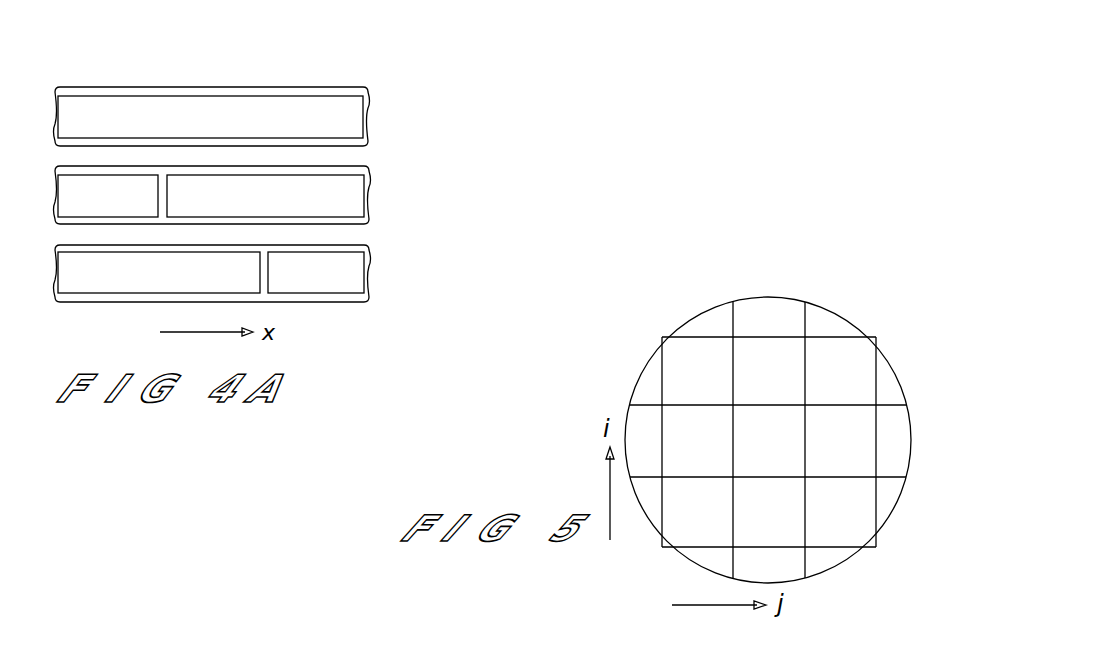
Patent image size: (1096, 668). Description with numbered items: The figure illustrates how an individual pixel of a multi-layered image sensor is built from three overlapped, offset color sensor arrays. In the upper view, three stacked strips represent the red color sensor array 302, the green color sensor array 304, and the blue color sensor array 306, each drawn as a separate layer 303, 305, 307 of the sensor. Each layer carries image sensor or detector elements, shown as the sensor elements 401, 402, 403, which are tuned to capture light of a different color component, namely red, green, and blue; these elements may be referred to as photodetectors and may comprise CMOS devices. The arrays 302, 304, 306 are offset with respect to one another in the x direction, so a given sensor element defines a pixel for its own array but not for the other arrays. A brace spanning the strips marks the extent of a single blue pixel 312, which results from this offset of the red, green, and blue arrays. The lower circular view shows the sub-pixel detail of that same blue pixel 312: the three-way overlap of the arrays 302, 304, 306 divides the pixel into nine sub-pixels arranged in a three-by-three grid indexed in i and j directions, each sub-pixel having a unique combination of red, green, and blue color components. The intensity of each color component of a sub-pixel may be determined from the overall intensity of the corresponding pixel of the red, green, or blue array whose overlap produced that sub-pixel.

In FIG. 4A, the blue pixel 312 is at (363, 64).
In FIG. 5, the blue pixel 312 is at (819, 298).
In FIG. 4A, the red color sensor array 302 is at (388, 105).
In FIG. 4A, the layer 303 is at (345, 87).
In FIG. 4A, the green color sensor array 304 is at (387, 183).
In FIG. 4A, the layer 305 is at (355, 166).
In FIG. 4A, the blue color sensor array 306 is at (387, 265).
In FIG. 4A, the layer 307 is at (358, 245).
In FIG. 4A, the sensor element 401 is at (222, 128).
In FIG. 4A, the sensor element 402 is at (134, 208).
In FIG. 4A, the sensor element 403 is at (167, 285).